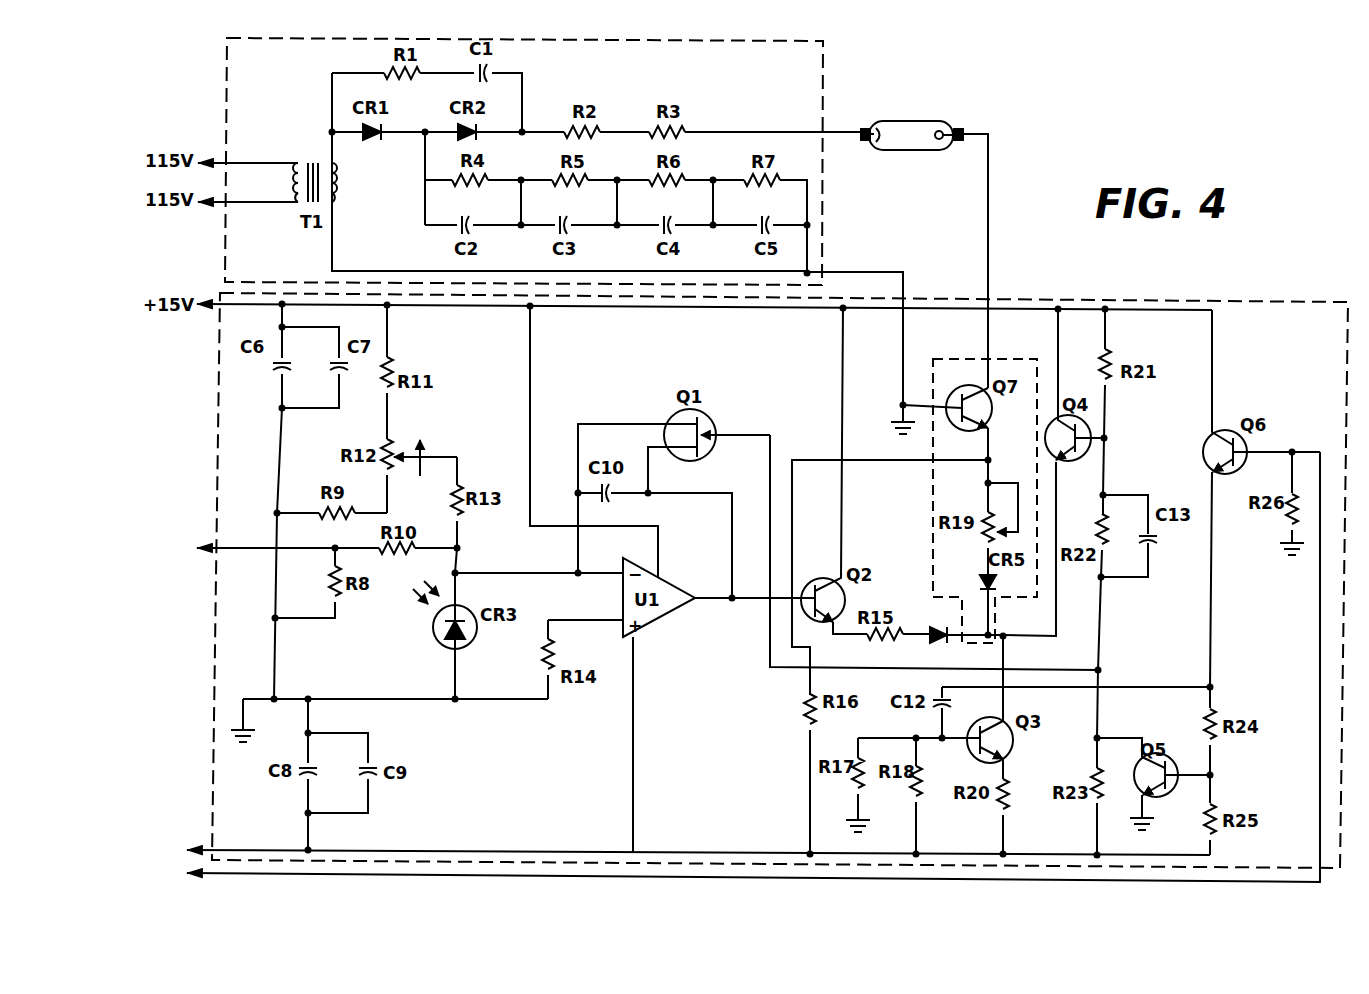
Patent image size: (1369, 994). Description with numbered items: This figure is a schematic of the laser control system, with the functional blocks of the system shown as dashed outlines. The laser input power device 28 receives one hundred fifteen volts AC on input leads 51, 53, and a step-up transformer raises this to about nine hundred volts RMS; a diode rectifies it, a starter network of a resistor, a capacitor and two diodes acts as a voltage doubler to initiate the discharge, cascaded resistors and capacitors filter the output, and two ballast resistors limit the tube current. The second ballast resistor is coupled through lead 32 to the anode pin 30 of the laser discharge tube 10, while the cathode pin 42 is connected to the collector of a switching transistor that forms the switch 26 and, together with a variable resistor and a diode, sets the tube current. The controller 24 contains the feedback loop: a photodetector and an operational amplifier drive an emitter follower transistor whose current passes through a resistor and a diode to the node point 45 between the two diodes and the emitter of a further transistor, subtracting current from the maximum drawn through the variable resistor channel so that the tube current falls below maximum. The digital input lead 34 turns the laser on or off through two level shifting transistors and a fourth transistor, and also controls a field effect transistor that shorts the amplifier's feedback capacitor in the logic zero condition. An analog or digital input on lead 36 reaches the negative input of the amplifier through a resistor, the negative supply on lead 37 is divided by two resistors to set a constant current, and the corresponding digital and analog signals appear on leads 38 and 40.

The laser discharge tube 10 is at (912, 121).
The controller 24 is at (220, 402).
The switch 26 is at (1000, 360).
The laser input power device 28 is at (824, 96).
The anode pin 30 is at (867, 127).
The lead 32 is at (866, 138).
The digital input lead 34 is at (413, 873).
The analog or digital input lead 36 is at (238, 550).
The negative supply lead 37 is at (218, 852).
The digital logic signal lead 38 is at (1002, 636).
The analog or digital signal lead 40 is at (949, 643).
The cathode pin 42 is at (967, 132).
The node point 45 is at (1005, 638).
The input lead 51 is at (248, 149).
The input lead 53 is at (248, 215).